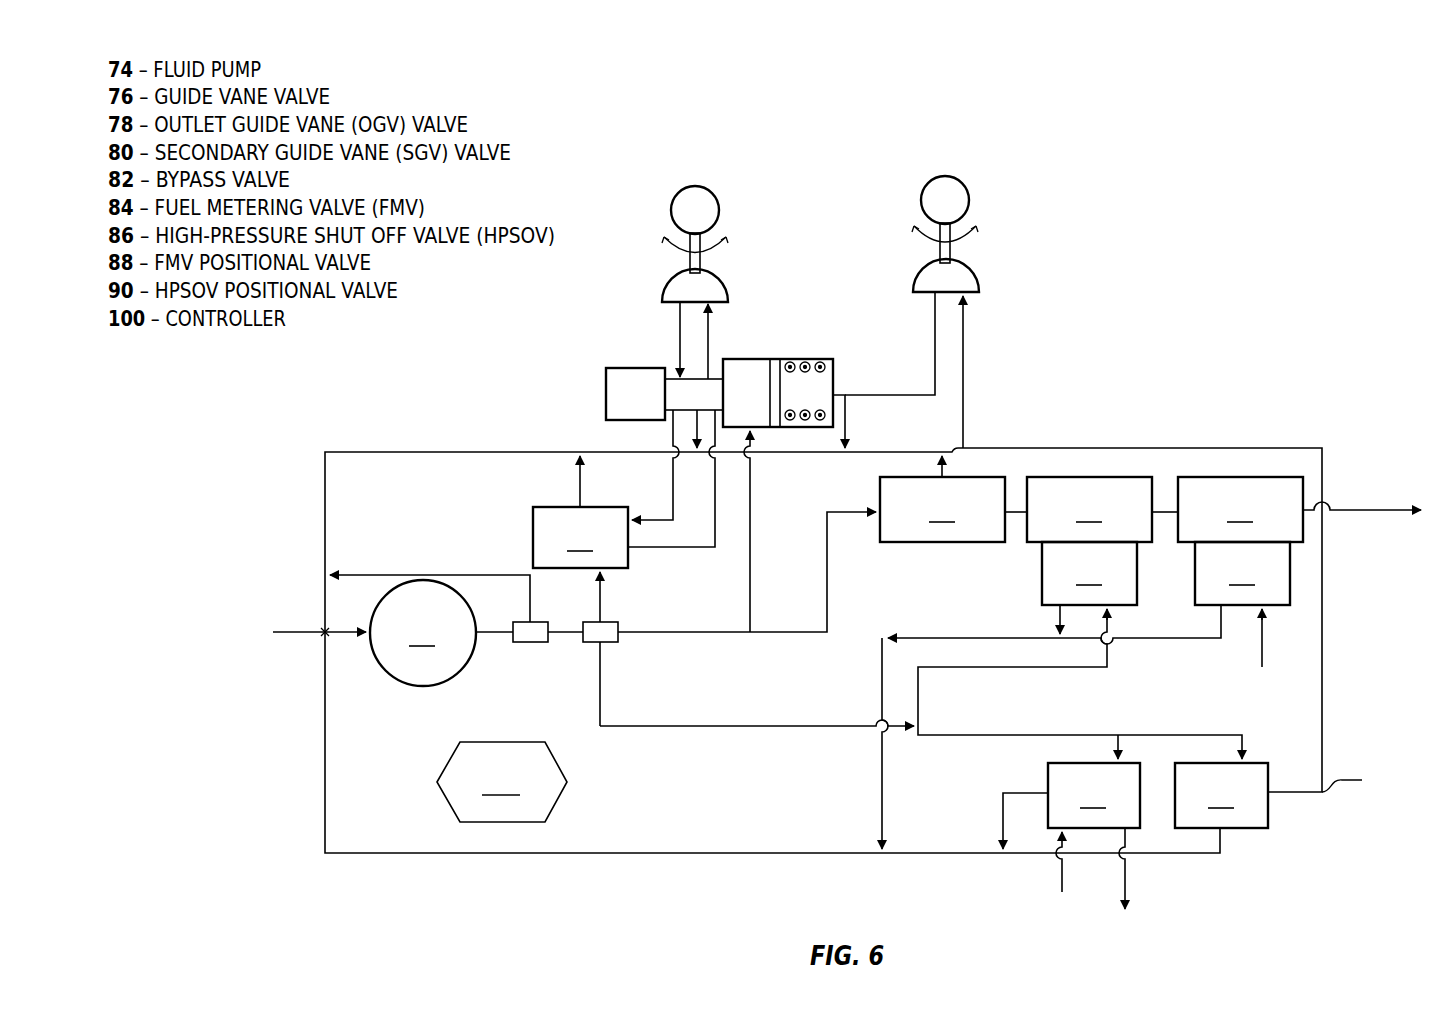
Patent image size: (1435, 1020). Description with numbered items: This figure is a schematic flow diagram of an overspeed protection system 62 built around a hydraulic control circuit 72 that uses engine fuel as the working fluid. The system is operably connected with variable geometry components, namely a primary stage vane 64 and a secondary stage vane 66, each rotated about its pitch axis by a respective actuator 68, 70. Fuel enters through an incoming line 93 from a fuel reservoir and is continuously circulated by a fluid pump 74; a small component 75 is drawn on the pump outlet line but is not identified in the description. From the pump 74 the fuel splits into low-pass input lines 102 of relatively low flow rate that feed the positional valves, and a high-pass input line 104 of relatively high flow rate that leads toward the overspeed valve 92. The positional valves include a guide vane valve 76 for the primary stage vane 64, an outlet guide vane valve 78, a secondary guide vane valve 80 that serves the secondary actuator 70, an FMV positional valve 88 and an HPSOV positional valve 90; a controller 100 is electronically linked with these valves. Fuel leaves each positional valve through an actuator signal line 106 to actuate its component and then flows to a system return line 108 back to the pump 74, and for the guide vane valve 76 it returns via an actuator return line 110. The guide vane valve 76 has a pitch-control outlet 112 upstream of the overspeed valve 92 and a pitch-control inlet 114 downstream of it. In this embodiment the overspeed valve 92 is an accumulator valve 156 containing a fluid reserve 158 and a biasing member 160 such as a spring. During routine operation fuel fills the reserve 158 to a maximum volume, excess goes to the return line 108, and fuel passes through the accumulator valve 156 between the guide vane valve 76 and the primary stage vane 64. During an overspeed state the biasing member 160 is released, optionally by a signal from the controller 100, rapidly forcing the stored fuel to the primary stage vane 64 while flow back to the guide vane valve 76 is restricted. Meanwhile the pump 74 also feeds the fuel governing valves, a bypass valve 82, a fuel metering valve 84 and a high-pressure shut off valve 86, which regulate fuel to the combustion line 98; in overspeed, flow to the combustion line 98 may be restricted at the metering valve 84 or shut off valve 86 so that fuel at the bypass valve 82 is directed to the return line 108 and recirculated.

The overspeed protection system 62 is at (486, 404).
The primary stage vane 64 is at (675, 194).
The secondary stage vane 66 is at (933, 180).
The actuator 68 is at (670, 278).
The actuator 70 is at (977, 275).
The control circuit 72 is at (481, 866).
The fluid pump 74 is at (423, 633).
The filter 75 is at (532, 644).
The guide vane valve 76 is at (580, 537).
The outlet guide vane (OGV) valve 78 is at (1094, 795).
The secondary guide vane (SGV) valve 80 is at (1221, 795).
The bypass valve 82 is at (942, 499).
The fuel metering valve 84 is at (1078, 509).
The high-pressure shut off valve 86 is at (1227, 509).
The FMV positional valve 88 is at (1089, 573).
The HPSOV positional valve 90 is at (1242, 573).
The overspeed valve 92 is at (572, 408).
The incoming line 93 is at (303, 630).
The combustion line 98 is at (1370, 510).
The controller 100 is at (502, 782).
The low-pass input lines 102 is at (1108, 752).
The high-pass input line 104 is at (712, 633).
The actuator signal line 106 is at (673, 550).
The system return line 108 is at (323, 508).
The actuator return line 110 is at (673, 502).
The pitch-control outlet 112 is at (630, 552).
The pitch-control inlet 114 is at (630, 518).
The accumulator valve 156 is at (605, 388).
The fluid reserve 158 is at (754, 380).
The biasing member 160 is at (820, 362).